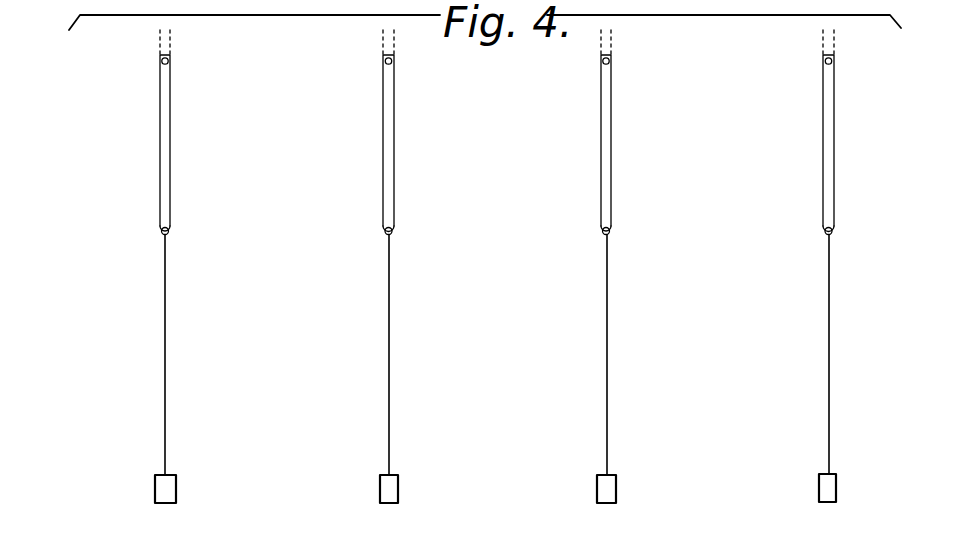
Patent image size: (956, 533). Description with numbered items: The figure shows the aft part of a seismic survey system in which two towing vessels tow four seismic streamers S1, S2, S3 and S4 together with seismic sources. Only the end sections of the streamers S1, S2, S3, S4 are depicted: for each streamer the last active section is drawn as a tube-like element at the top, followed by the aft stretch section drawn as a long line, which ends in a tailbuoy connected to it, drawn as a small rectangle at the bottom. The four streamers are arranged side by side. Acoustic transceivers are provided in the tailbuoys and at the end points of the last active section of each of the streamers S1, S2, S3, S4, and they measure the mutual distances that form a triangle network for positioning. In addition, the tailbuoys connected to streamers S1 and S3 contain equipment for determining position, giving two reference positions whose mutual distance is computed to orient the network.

The seismic streamer S1 is at (151, 88).
The seismic streamer S2 is at (398, 98).
The seismic streamer S3 is at (597, 88).
The seismic streamer S4 is at (838, 94).